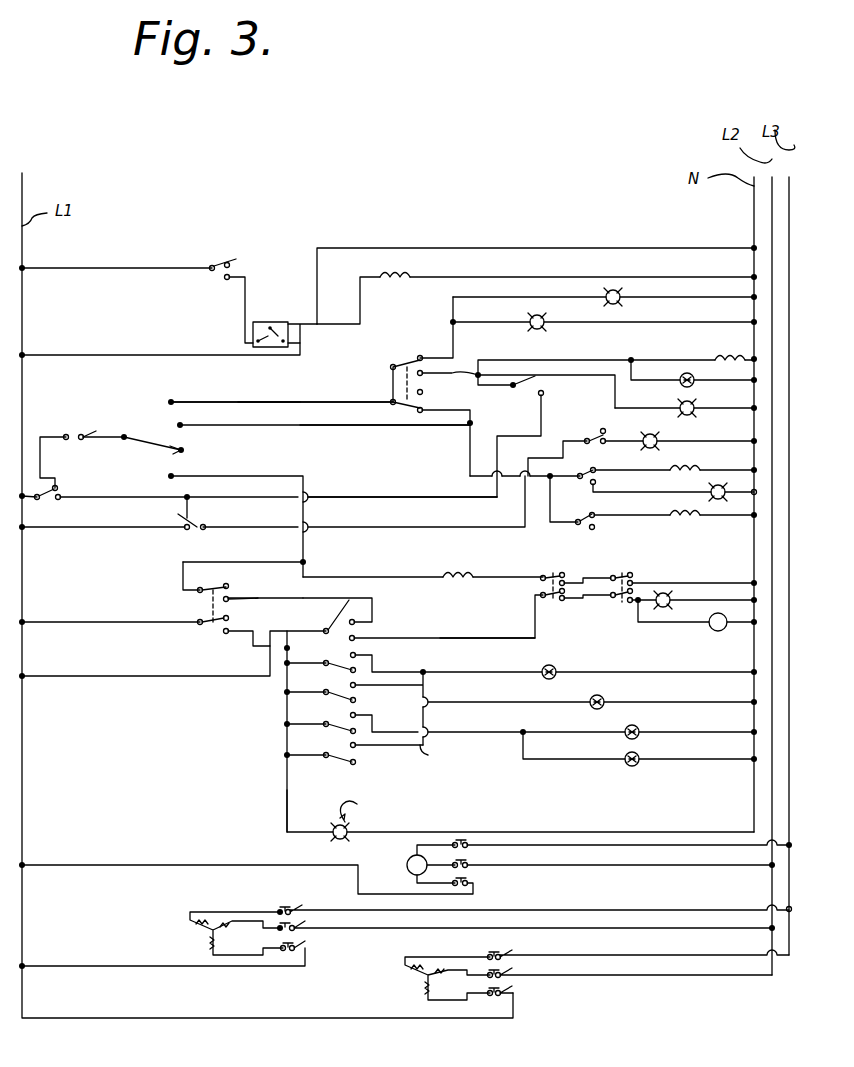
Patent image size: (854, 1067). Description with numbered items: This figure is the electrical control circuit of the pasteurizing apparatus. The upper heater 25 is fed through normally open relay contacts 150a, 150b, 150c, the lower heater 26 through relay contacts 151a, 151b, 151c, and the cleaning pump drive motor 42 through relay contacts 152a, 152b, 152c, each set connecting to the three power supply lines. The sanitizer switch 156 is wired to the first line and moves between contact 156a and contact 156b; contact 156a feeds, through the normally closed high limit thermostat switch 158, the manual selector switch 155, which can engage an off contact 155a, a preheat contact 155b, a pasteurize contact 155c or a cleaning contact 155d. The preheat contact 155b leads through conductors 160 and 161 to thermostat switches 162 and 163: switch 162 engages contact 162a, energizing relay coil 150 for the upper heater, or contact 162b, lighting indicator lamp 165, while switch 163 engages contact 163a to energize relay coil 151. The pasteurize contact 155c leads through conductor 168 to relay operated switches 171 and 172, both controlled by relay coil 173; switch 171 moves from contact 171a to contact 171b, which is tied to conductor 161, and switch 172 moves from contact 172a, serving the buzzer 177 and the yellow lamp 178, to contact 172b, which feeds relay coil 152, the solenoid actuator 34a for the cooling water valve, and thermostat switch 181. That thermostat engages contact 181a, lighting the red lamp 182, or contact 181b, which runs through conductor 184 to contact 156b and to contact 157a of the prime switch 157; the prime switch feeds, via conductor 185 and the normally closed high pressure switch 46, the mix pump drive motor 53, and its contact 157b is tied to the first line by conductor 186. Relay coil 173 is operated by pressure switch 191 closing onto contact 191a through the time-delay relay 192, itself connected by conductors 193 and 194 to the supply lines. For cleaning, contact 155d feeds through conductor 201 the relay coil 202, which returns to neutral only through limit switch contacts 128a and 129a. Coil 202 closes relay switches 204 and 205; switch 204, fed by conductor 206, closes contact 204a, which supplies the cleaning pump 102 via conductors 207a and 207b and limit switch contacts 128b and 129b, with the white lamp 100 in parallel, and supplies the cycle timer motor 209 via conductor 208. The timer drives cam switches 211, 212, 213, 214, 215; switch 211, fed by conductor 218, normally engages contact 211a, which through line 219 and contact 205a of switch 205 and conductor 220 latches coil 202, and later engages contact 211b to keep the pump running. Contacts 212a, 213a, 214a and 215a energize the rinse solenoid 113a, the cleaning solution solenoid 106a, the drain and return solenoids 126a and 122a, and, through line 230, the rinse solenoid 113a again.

The pressure switch 191 is at (225, 255).
The contact 191a is at (225, 282).
The time-delay relay 192 is at (262, 320).
The conductor 193 is at (103, 353).
The conductor 194 is at (358, 247).
The relay coil 173 is at (400, 275).
The buzzer 177 is at (620, 295).
The cycle finished lamp 178 is at (545, 320).
The relay operated switch 172 is at (395, 365).
The contact 172a is at (422, 355).
The contact 172b is at (445, 368).
The relay operated switch 171 is at (395, 405).
The contact 171a is at (424, 392).
The contact 171b is at (422, 415).
The conductor 161 is at (468, 474).
The thermostat switch 181 is at (512, 390).
The contact 181a is at (530, 374).
The contact 181b is at (543, 392).
The relay coil 152 is at (722, 352).
The solenoid actuator 34a is at (694, 376).
The red indicator lamp 182 is at (694, 404).
The high pressure switch 46 is at (595, 430).
The mix pump drive motor 53 is at (656, 437).
The thermostatically operated switch 162 is at (572, 498).
The contact 162a is at (596, 466).
The contact 162b is at (596, 482).
The relay coil 150 is at (680, 466).
The indicator lamp 165 is at (712, 487).
The thermostatically operated switch 163 is at (578, 526).
The contact 163a is at (596, 512).
The relay coil 151 is at (680, 518).
The selector switch 155 is at (145, 440).
The off contact 155a is at (184, 448).
The preheat contact 155b is at (182, 423).
The pasteurize contact 155c is at (169, 400).
The cleaning contact 155d is at (174, 472).
The conductor 168 is at (236, 400).
The conductor 160 is at (312, 428).
The high limit thermostat switch 158 is at (78, 434).
The sanitizer switch 156 is at (40, 502).
The contact 156a is at (58, 485).
The contact 156b is at (62, 500).
The prime switch 157 is at (192, 530).
The contact 157a is at (195, 518).
The contact 157b is at (182, 530).
The conductor 186 is at (100, 530).
The conductor 184 is at (405, 500).
The conductor 185 is at (418, 530).
The conductor 201 is at (308, 560).
The relay coil 202 is at (460, 572).
The relay switch 205 is at (198, 574).
The contact 205a is at (232, 602).
The conductor 220 is at (250, 595).
The line 219 is at (303, 596).
The conductor 206 is at (150, 615).
The relay switch 204 is at (210, 626).
The contact 204a is at (232, 636).
The conductor 218 is at (110, 674).
The conductor 207a is at (272, 680).
The conductor 207b is at (450, 636).
The cam operated switch 211 is at (352, 598).
The contact 211a is at (356, 621).
The contact 211b is at (356, 637).
The cam switch 212 is at (340, 675).
The contact 212a is at (356, 652).
The cam switch 213 is at (340, 705).
The contact 213a is at (358, 690).
The cam switch 214 is at (340, 736).
The contact 214a is at (376, 722).
The cam switch 215 is at (340, 766).
The contact 215a is at (358, 750).
The line 230 is at (428, 755).
The conductor 208 is at (283, 790).
The cycle timer motor 209 is at (348, 826).
The solenoid actuator 113a is at (553, 665).
The solenoid actuator 106a is at (602, 696).
The solenoid actuator 126a is at (638, 728).
The solenoid actuator 122a is at (632, 766).
The limit switch contact 128a is at (550, 572).
The limit switch contact 128b is at (550, 600).
The limit switch contact 129a is at (622, 572).
The limit switch contact 129b is at (618, 602).
The white indicator lamp 100 is at (670, 596).
The cleaning pump 102 is at (712, 630).
The cleaning pump drive motor 42 is at (405, 862).
The relay contact 152a is at (468, 882).
The relay contact 152b is at (468, 863).
The relay contact 152c is at (468, 843).
The lower heater 26 is at (190, 930).
The relay contact 151a is at (306, 943).
The relay contact 151b is at (300, 918).
The relay contact 151c is at (282, 908).
The upper heater 25 is at (405, 975).
The relay contact 150a is at (502, 991).
The relay contact 150b is at (502, 972).
The relay contact 150c is at (500, 953).